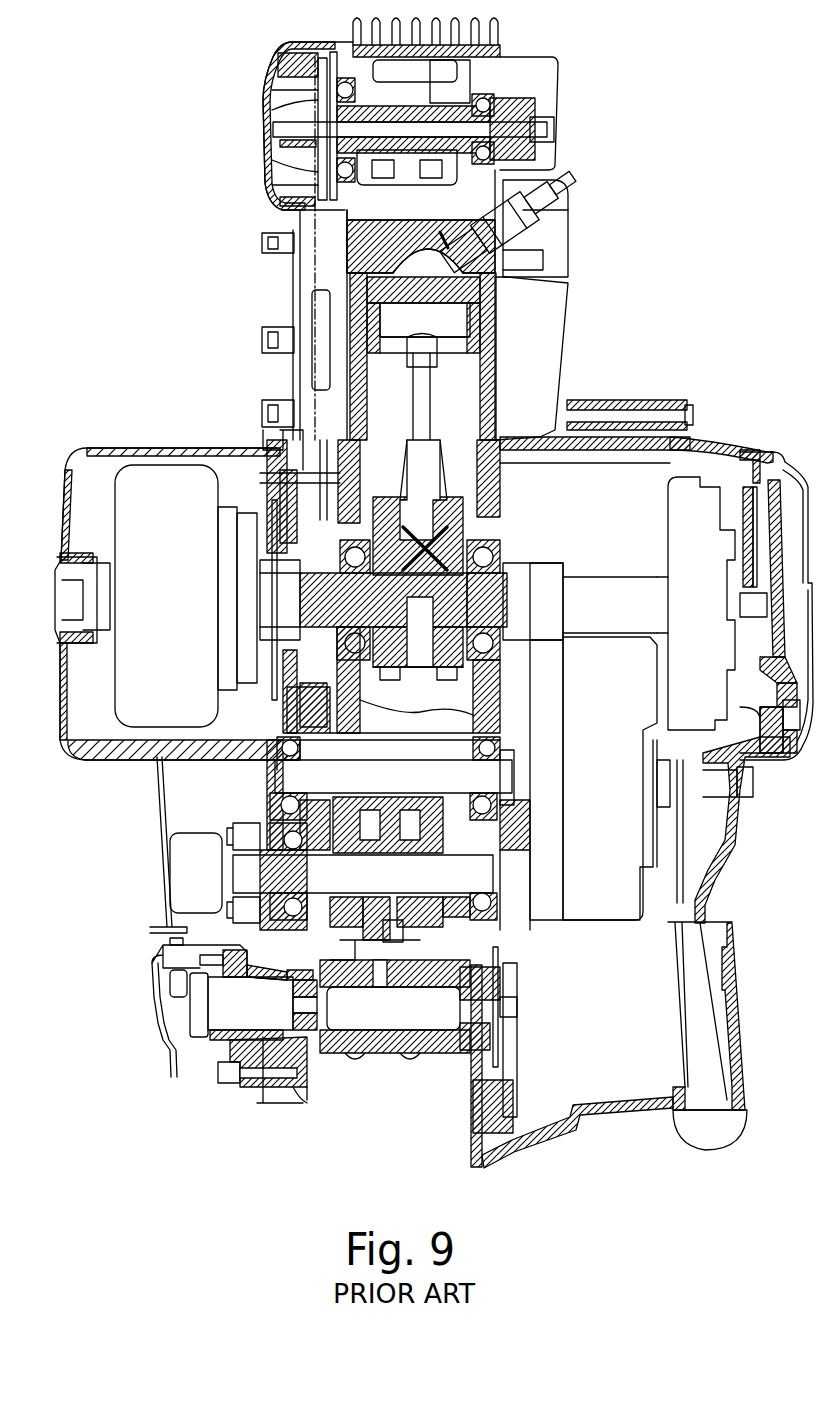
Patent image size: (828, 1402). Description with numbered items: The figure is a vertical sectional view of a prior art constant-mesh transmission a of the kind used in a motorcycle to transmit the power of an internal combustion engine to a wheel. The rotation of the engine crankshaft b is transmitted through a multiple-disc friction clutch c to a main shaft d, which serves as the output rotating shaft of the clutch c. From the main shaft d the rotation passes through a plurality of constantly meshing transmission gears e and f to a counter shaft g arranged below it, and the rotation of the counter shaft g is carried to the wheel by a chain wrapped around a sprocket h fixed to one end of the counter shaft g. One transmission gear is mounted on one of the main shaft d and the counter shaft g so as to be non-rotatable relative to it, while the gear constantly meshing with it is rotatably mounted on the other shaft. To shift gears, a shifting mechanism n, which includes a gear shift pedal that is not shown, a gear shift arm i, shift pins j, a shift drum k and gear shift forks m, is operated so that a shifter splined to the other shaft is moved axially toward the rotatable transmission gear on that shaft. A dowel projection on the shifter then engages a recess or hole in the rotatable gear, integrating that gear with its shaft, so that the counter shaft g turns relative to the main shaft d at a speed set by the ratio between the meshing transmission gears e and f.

The constant-mesh transmission a is at (525, 840).
The crankshaft b is at (403, 566).
The multiple-disc friction clutch c is at (607, 918).
The main shaft d is at (493, 780).
The transmission gear e is at (390, 723).
The transmission gear f is at (388, 973).
The counter shaft g is at (477, 878).
The sprocket h is at (247, 807).
The gear shift arm i is at (498, 950).
The shift pins j is at (467, 1053).
The shift drum k is at (387, 1053).
The gear shift forks m is at (365, 935).
The shifting mechanism n is at (537, 1012).